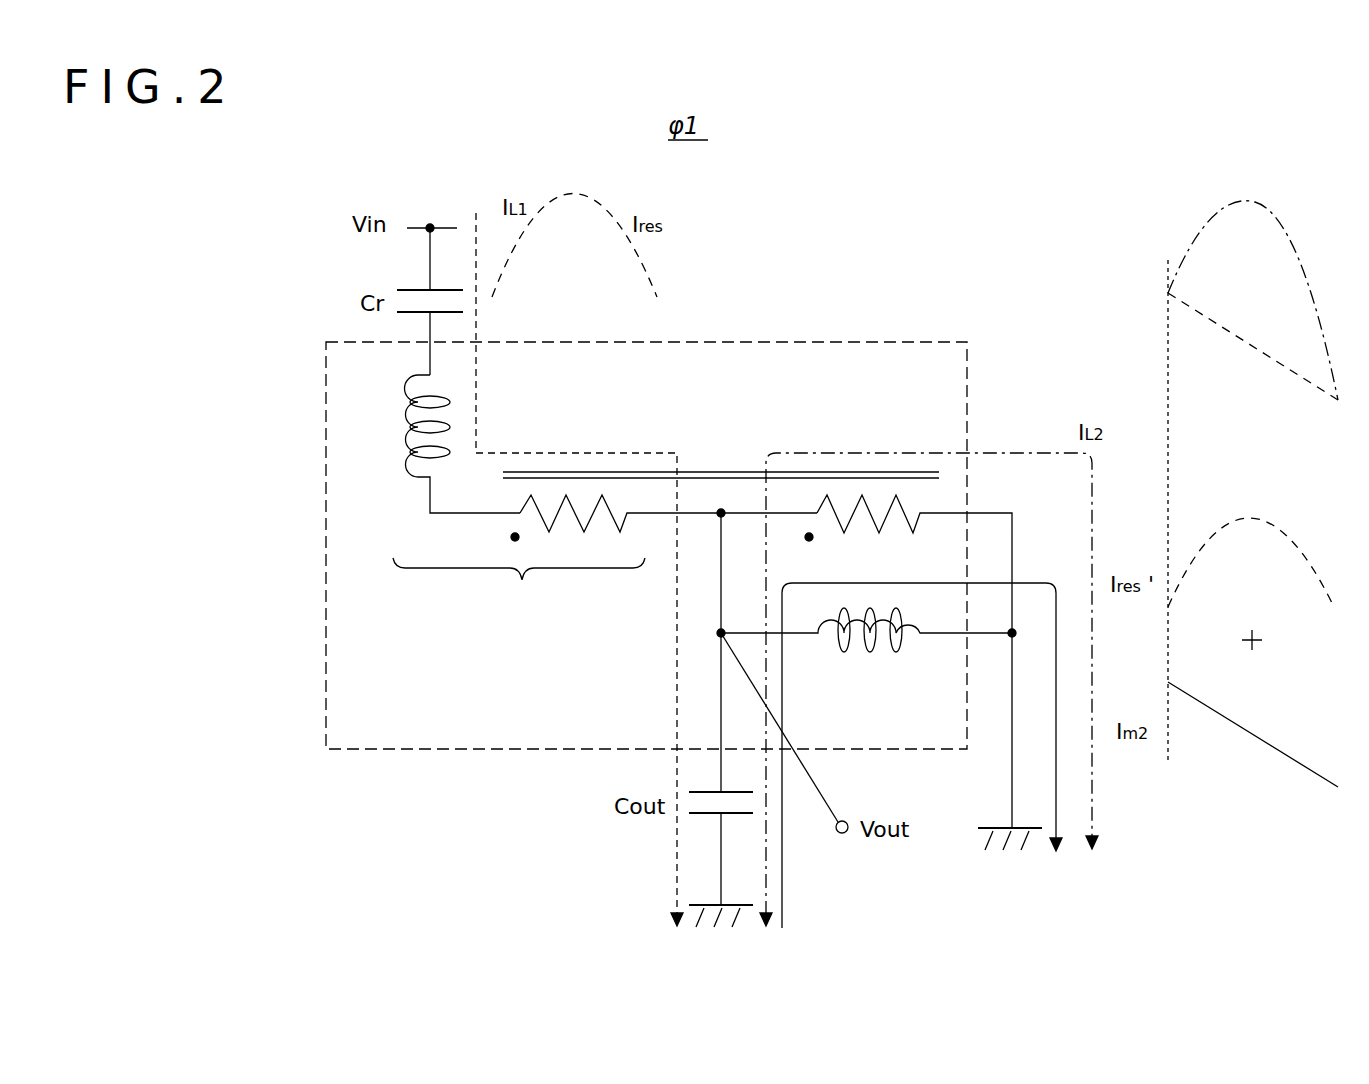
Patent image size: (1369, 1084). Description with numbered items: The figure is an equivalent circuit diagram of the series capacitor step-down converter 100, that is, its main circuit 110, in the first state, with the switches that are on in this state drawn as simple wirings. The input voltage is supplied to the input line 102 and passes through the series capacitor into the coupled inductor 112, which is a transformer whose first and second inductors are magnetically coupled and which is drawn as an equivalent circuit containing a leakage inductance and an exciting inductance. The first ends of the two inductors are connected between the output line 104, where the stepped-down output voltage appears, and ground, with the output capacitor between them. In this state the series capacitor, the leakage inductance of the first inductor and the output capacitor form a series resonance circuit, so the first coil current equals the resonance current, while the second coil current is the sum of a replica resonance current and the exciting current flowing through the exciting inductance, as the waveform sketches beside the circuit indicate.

The input line 102 is at (441, 228).
The coupled inductor 112 is at (879, 342).
The output line 104 is at (818, 787).
The series capacitor step-down converter 100 is at (1312, 142).
The main circuit 110 is at (1230, 494).